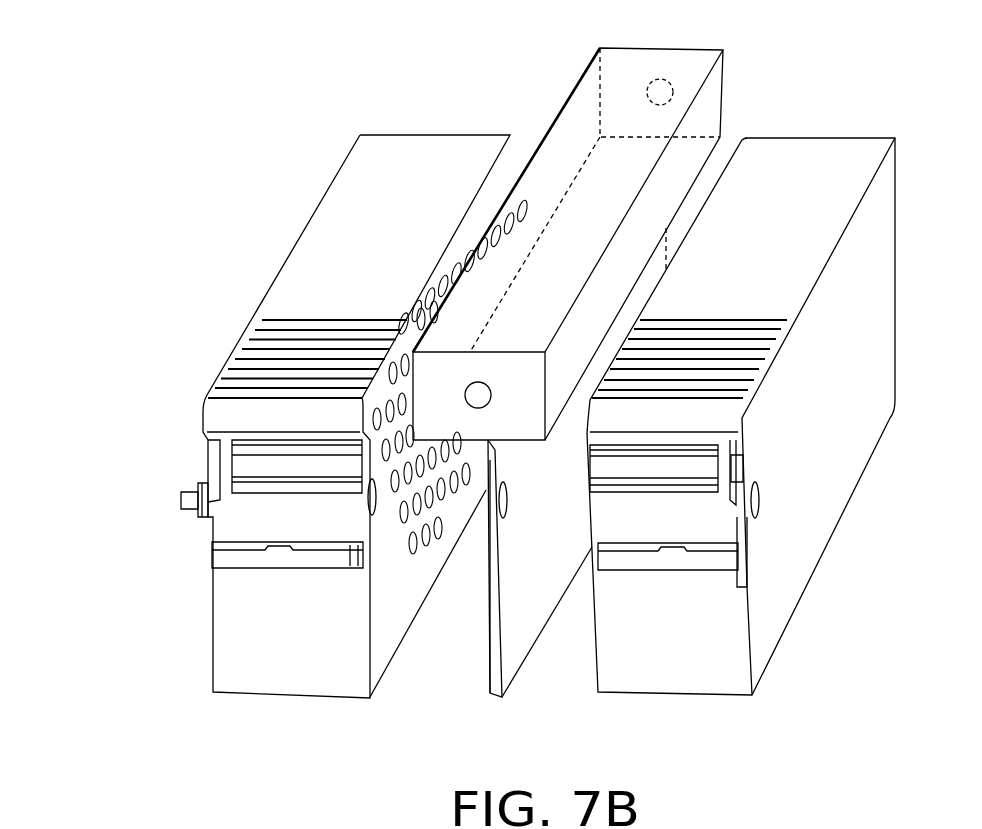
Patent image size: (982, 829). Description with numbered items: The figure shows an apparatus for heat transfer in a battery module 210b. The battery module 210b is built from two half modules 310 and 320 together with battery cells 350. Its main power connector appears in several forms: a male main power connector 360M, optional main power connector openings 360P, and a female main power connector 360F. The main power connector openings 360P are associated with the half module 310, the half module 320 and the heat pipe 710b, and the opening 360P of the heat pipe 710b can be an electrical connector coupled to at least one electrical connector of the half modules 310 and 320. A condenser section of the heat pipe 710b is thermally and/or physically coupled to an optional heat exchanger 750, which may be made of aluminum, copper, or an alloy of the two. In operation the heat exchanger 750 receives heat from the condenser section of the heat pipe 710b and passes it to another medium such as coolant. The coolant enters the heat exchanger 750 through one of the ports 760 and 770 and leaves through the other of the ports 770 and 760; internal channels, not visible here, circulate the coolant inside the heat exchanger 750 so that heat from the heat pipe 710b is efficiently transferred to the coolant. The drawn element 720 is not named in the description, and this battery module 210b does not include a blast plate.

The battery module 210b is at (198, 77).
The half module 310 is at (360, 135).
The half module 320 is at (895, 137).
The battery cells 350 is at (430, 553).
The male main power connector 360M is at (187, 500).
The main power connector openings 360P is at (372, 514).
The female main power connector 360F is at (758, 505).
The heat exchanger 750 is at (725, 50).
The port 760 is at (470, 393).
The port 770 is at (657, 95).
The heat pipe 710b is at (502, 697).
The card faces 720 is at (485, 628).